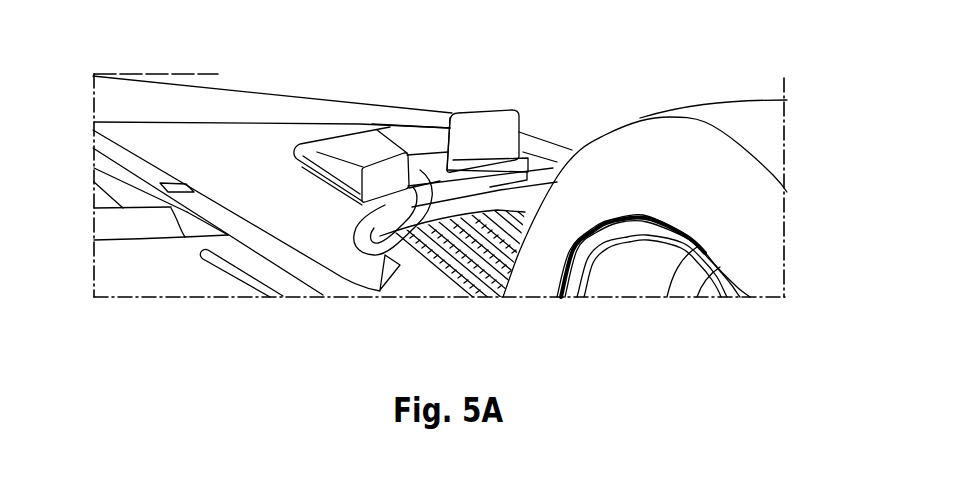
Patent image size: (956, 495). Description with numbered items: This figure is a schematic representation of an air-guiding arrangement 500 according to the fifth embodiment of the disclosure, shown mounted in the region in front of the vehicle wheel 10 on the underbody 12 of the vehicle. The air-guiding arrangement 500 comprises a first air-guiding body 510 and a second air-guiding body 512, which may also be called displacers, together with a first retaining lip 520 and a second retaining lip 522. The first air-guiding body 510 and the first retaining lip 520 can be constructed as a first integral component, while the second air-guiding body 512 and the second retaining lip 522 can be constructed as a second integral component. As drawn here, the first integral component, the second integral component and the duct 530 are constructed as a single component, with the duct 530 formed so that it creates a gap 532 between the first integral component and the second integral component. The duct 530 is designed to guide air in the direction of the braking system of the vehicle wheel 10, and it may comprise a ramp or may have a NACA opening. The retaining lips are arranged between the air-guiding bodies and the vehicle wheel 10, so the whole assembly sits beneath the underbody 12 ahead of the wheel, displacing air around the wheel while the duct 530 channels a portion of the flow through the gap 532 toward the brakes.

The vehicle wheel 10 is at (717, 117).
The underbody 12 is at (170, 137).
The air-guiding arrangement 500 is at (530, 118).
The first air-guiding body 510 is at (428, 133).
The second air-guiding body 512 is at (325, 163).
The first retaining lip 520 is at (515, 115).
The second retaining lip 522 is at (363, 203).
The duct 530 is at (366, 143).
The gap 532 is at (392, 255).